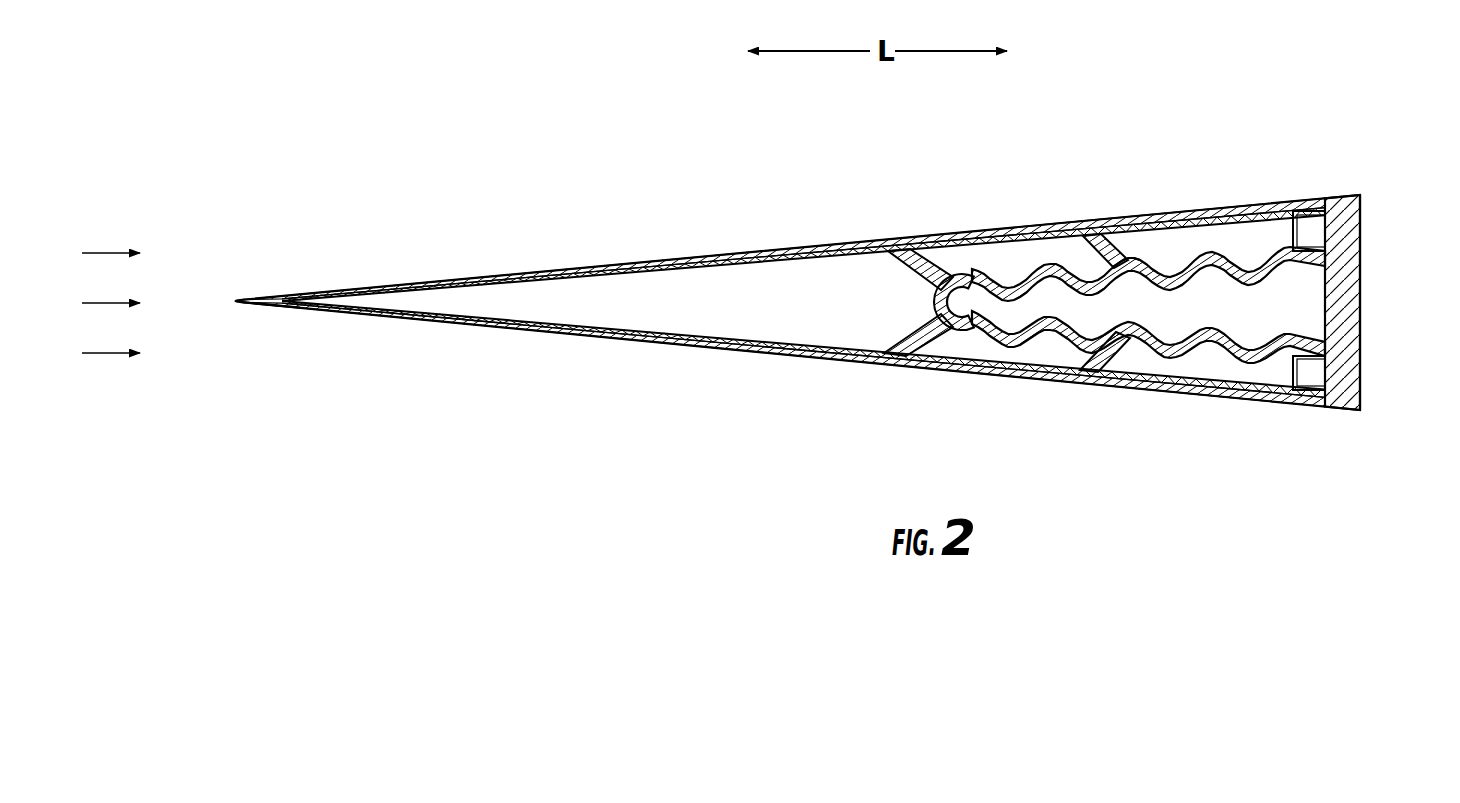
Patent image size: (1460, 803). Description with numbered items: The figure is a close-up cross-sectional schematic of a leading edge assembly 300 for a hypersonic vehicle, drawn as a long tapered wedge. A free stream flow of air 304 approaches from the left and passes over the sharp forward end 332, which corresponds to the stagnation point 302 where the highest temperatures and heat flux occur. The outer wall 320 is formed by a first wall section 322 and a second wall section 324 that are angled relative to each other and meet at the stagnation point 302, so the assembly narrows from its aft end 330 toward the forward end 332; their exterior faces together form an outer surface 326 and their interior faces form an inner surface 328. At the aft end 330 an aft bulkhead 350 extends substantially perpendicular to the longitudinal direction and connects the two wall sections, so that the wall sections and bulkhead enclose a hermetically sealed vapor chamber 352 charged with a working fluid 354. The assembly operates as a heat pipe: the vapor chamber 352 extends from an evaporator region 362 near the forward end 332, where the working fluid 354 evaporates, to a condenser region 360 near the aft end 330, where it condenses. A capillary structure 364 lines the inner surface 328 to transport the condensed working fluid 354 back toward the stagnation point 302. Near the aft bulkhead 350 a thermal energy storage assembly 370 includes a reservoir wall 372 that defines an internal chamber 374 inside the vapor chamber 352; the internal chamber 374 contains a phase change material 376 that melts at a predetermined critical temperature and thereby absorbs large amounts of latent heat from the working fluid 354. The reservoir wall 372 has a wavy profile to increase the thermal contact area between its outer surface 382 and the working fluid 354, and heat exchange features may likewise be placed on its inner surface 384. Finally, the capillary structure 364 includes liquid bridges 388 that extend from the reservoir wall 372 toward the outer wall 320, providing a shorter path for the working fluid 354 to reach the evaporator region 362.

The leading edge assembly 300 is at (540, 70).
The stagnation point 302 is at (222, 299).
The free stream flow of air 304 is at (105, 356).
The forward end 332 is at (233, 338).
The outer wall 320 is at (703, 252).
The first wall section 322 is at (620, 262).
The outer surface 326 is at (486, 270).
The inner surface 328 is at (460, 298).
The second wall section 324 is at (600, 336).
The evaporator region 362 is at (371, 312).
The working fluid 354 is at (690, 322).
The vapor chamber 352 is at (779, 317).
The capillary structure 364 is at (860, 258).
The liquid bridges 388 is at (937, 356).
The reservoir wall 372 is at (975, 270).
The thermal energy storage assembly 370 is at (1077, 256).
The outer surface of reservoir wall 382 is at (1157, 258).
The inner surface of reservoir wall 384 is at (1142, 290).
The internal chamber 374 is at (1229, 313).
The phase change material 376 is at (1288, 303).
The aft bulkhead 350 is at (1350, 370).
The condenser region 360 is at (1300, 226).
The aft end 330 is at (1348, 462).